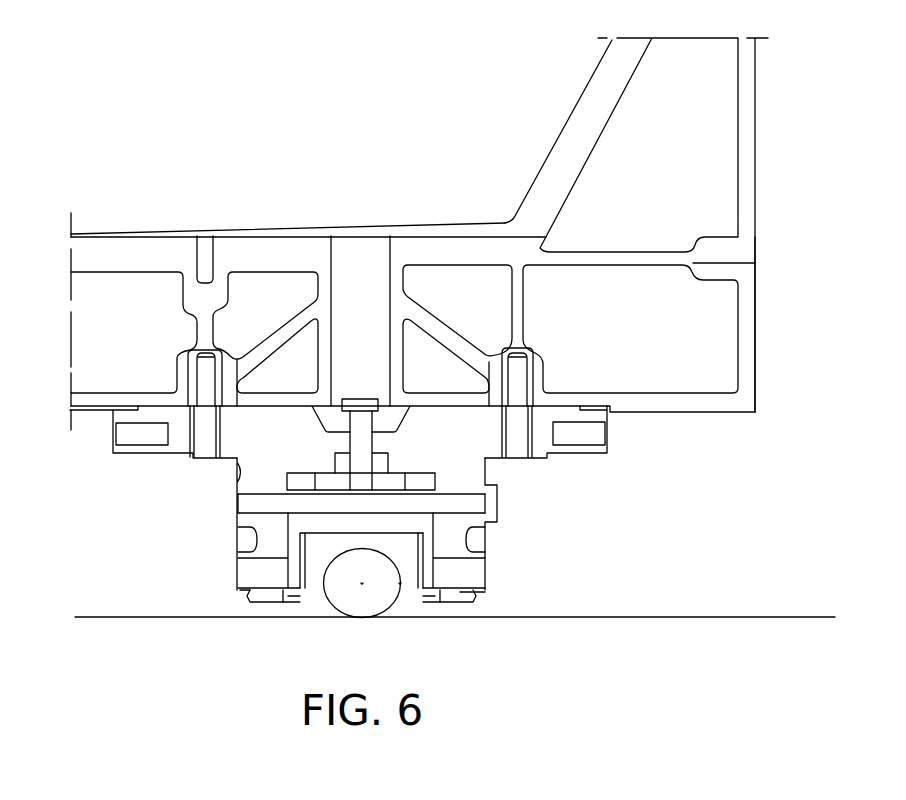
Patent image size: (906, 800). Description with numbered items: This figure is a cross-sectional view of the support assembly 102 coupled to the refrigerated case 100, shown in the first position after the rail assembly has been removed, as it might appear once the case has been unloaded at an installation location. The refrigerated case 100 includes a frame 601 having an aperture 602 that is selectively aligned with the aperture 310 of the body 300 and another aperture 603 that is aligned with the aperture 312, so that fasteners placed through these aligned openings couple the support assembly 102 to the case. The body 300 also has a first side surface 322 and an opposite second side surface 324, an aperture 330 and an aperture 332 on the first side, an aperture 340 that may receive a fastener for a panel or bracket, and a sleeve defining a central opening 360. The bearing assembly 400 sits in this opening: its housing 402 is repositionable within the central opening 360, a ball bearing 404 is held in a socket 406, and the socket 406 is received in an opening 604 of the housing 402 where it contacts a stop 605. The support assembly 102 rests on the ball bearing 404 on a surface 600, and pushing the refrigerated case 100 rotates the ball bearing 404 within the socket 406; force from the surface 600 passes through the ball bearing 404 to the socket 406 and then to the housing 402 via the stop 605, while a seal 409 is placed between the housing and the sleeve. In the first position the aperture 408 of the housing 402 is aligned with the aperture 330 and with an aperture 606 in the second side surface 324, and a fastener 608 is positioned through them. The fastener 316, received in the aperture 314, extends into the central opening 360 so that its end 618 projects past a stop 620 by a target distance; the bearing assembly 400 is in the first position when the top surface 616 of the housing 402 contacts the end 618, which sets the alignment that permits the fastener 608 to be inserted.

The refrigerated case 100 is at (463, 110).
The support assembly 102 is at (655, 548).
The body 300 is at (277, 457).
The aperture 310 is at (205, 445).
The aperture 312 is at (520, 445).
The aperture 314 is at (342, 430).
The fastener 316 is at (365, 398).
The first side surface 322 is at (228, 551).
The second side surface 324 is at (553, 582).
The aperture 330 is at (243, 525).
The aperture 332 is at (262, 592).
The aperture 340 is at (138, 450).
The central opening 360 is at (460, 588).
The bearing assembly 400 is at (351, 626).
The housing 402 is at (440, 565).
The ball bearing 404 is at (375, 600).
The socket 406 is at (410, 580).
The aperture 408 is at (300, 537).
The seal 409 is at (440, 600).
The surface 600 is at (105, 617).
The frame 601 is at (163, 255).
The aperture 602 is at (197, 378).
The aperture 603 is at (530, 372).
The opening 604 is at (302, 565).
The stop 605 is at (285, 595).
The aperture 606 is at (497, 497).
The fastener 608 is at (255, 500).
The top surface 616 is at (317, 473).
The end 618 is at (358, 488).
The stop 620 is at (440, 520).